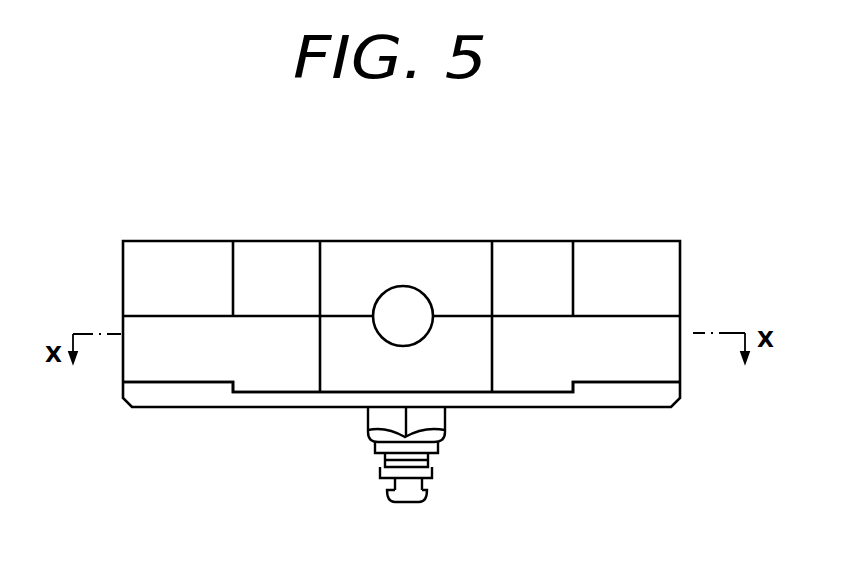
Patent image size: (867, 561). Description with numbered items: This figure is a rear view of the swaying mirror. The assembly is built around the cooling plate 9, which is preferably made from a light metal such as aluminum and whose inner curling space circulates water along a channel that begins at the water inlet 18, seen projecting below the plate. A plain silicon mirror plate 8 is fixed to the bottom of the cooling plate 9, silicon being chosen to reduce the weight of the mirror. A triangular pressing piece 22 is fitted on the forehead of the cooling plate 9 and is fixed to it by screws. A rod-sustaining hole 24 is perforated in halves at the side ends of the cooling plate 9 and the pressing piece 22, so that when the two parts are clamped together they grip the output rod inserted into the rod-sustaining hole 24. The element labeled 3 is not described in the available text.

The clamp body 3 is at (662, 233).
The silicon mirror plate 8 is at (208, 268).
The cooling plate 9 is at (168, 351).
The water inlet 18 is at (420, 459).
The pressing piece 22 is at (592, 197).
The rod-sustaining hole 24 is at (388, 325).